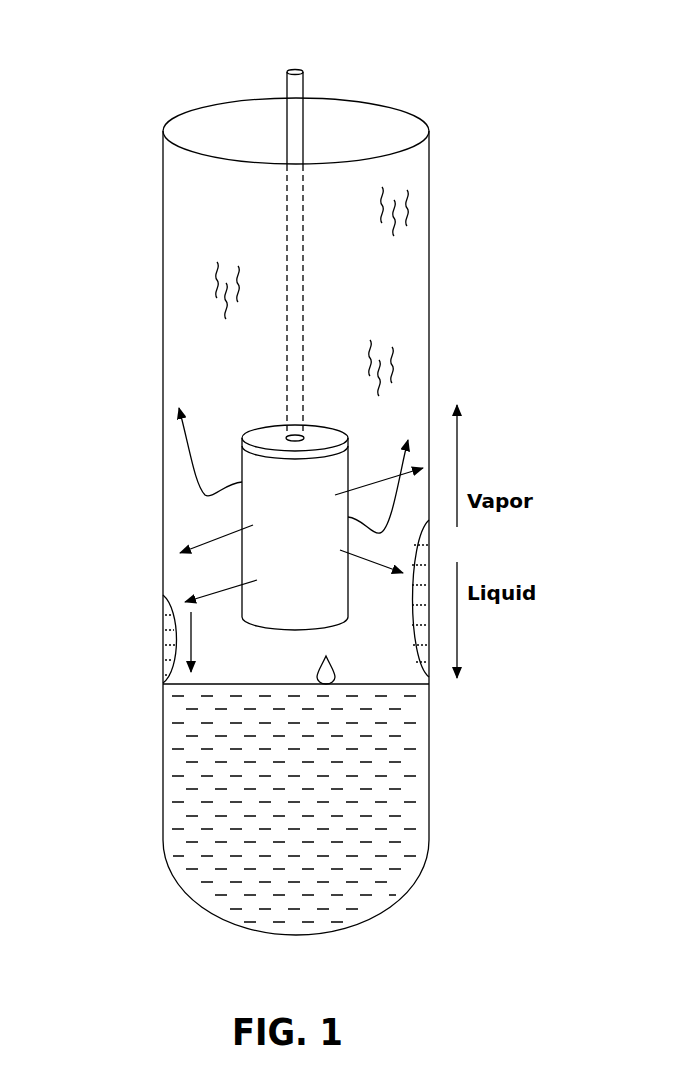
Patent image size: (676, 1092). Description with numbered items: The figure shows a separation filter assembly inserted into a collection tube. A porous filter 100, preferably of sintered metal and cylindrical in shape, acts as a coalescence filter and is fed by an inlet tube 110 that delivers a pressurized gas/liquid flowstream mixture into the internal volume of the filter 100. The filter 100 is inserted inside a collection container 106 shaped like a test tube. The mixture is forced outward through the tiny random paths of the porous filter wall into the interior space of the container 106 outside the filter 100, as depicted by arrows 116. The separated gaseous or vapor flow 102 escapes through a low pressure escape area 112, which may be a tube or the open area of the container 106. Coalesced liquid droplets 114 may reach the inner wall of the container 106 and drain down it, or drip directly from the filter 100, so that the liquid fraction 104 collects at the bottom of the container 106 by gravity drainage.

The porous filter 100 is at (255, 505).
The gaseous or vapor flow 102 is at (408, 200).
The liquid fraction 104 is at (420, 797).
The collection container 106 is at (163, 193).
The inlet tube 110 is at (296, 70).
The low pressure escape area 112 is at (400, 118).
The coalesced liquid droplets 114 is at (165, 640).
The arrows 116 is at (218, 590).